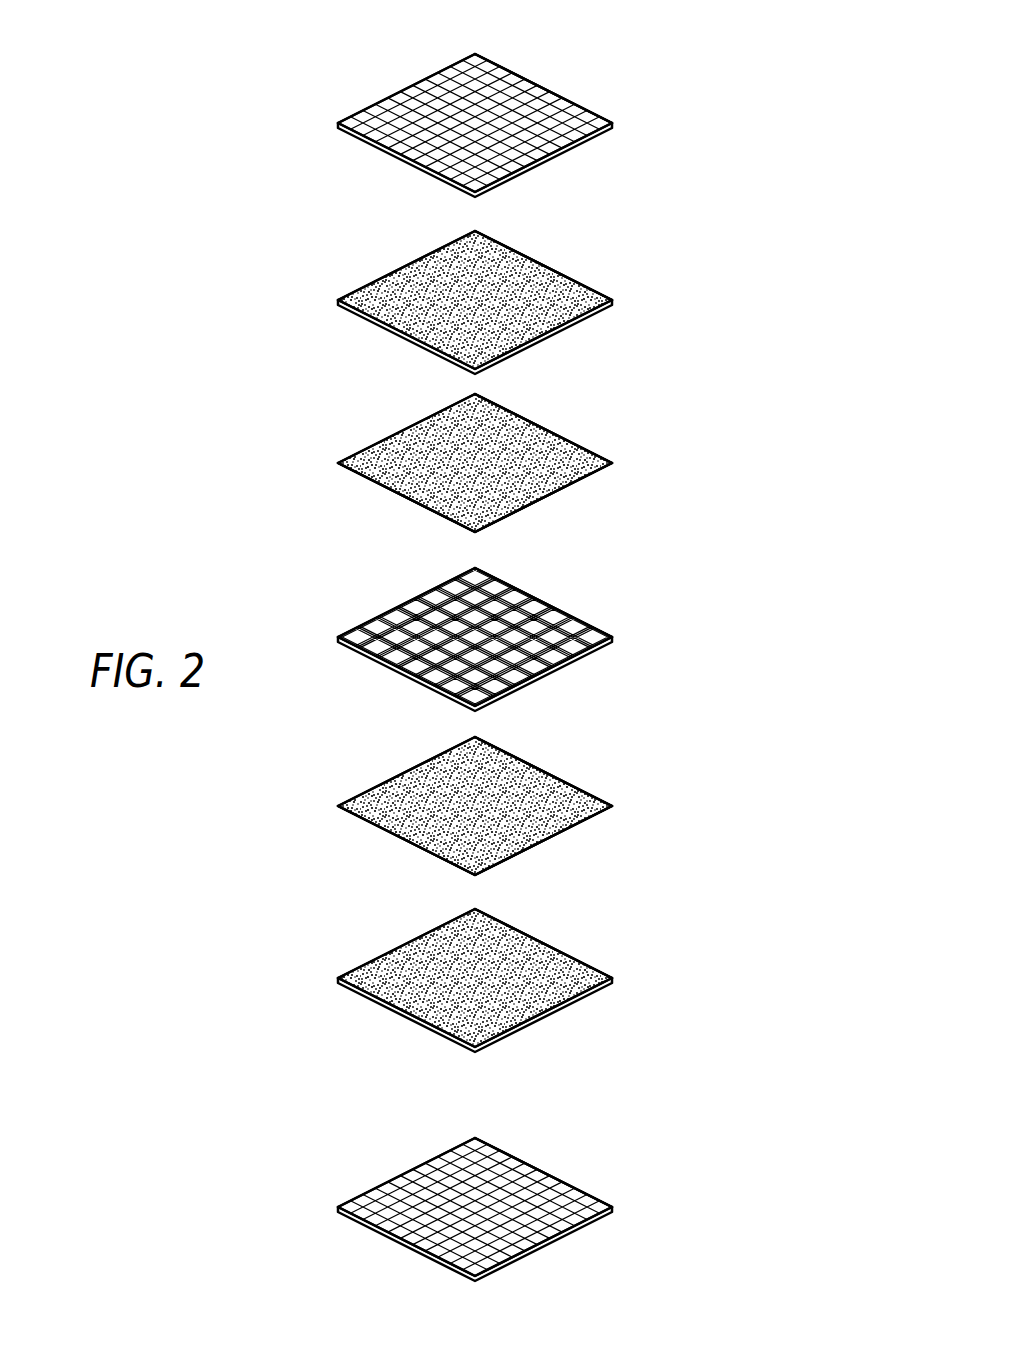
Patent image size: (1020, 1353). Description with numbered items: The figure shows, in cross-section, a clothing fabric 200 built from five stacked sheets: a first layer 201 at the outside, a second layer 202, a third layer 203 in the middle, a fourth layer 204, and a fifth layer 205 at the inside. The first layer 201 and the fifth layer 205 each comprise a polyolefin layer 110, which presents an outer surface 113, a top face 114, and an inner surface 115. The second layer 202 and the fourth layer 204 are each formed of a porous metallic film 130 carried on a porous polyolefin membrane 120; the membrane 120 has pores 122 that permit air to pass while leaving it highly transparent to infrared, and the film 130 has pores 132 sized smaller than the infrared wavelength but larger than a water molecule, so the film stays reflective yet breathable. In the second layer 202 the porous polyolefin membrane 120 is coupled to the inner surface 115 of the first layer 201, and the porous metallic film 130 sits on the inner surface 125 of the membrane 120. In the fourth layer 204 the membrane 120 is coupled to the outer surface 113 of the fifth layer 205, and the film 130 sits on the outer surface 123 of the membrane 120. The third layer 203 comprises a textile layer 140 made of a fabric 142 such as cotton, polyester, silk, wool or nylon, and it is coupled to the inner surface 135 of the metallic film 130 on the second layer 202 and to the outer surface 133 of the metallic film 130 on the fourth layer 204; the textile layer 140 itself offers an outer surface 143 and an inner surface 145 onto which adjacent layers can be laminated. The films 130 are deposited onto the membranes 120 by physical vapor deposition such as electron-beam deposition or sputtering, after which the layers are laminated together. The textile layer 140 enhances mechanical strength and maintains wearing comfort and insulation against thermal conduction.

The clothing fabric 200 is at (695, 1277).
The first layer 201 is at (393, 93).
The second layer 202 is at (335, 258).
The third layer 203 is at (393, 611).
The fourth layer 204 is at (335, 775).
The fifth layer 205 is at (393, 1177).
The polyolefin layer 110 is at (443, 90).
The outer surface 113 is at (570, 127).
The top surface of mesh layer 114 is at (523, 110).
The inner surface 115 is at (572, 152).
The porous polyolefin membrane 120 is at (443, 267).
The pores 122 is at (490, 300).
The outer surface 123 is at (570, 305).
The inner surface 125 is at (572, 328).
The porous metallic film 130 is at (443, 430).
The pores 132 is at (490, 463).
The outer surface 133 is at (570, 468).
The inner surface 135 is at (572, 491).
The textile layer 140 is at (443, 605).
The fabric 142 is at (523, 622).
The outer surface 143 is at (570, 642).
The inner surface 145 is at (572, 666).